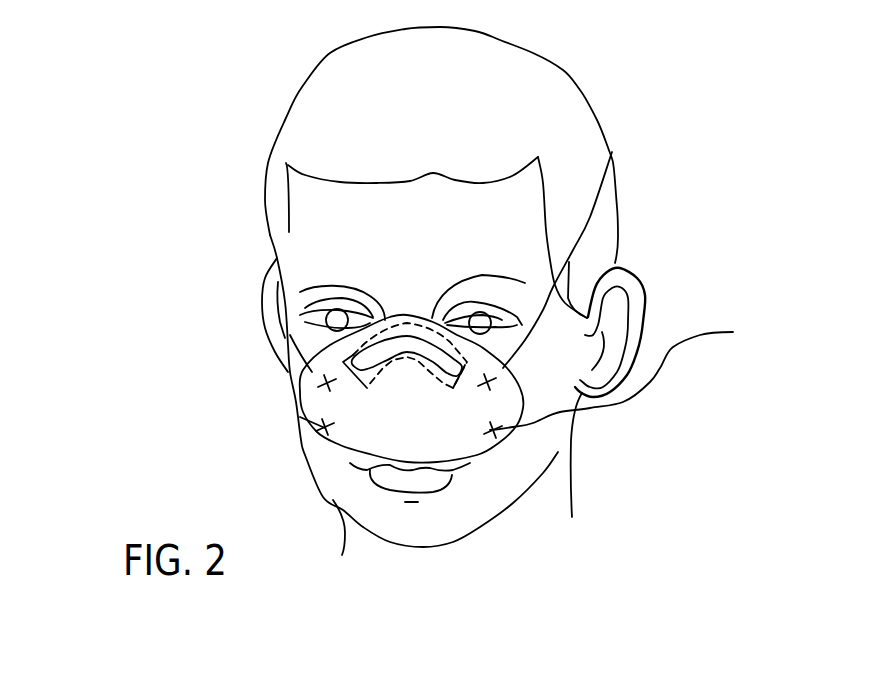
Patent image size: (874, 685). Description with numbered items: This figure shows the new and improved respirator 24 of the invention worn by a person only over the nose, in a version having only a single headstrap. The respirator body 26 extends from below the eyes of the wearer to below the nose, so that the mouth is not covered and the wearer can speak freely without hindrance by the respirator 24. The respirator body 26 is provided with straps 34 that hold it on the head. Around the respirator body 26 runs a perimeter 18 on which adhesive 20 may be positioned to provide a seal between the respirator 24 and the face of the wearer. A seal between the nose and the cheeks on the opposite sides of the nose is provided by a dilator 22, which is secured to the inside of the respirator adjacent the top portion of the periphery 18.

The perimeter 18 is at (523, 418).
The adhesive 20 is at (360, 356).
The dilator 22 is at (357, 347).
The respirator 24 is at (323, 420).
The respirator body 26 is at (330, 386).
The straps 34 is at (590, 222).